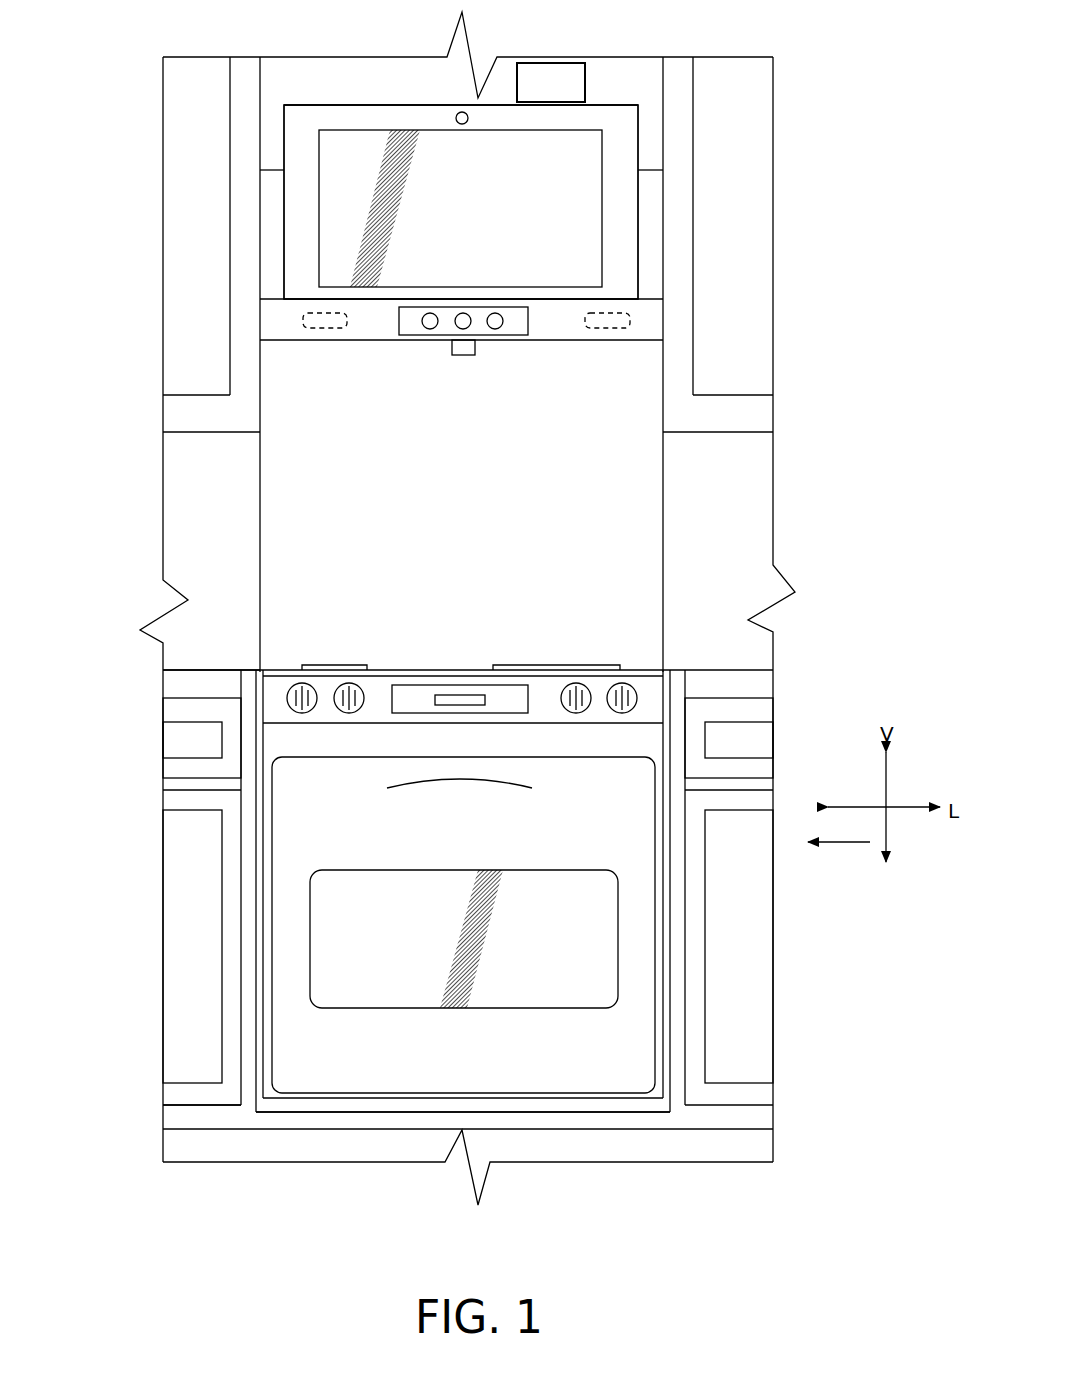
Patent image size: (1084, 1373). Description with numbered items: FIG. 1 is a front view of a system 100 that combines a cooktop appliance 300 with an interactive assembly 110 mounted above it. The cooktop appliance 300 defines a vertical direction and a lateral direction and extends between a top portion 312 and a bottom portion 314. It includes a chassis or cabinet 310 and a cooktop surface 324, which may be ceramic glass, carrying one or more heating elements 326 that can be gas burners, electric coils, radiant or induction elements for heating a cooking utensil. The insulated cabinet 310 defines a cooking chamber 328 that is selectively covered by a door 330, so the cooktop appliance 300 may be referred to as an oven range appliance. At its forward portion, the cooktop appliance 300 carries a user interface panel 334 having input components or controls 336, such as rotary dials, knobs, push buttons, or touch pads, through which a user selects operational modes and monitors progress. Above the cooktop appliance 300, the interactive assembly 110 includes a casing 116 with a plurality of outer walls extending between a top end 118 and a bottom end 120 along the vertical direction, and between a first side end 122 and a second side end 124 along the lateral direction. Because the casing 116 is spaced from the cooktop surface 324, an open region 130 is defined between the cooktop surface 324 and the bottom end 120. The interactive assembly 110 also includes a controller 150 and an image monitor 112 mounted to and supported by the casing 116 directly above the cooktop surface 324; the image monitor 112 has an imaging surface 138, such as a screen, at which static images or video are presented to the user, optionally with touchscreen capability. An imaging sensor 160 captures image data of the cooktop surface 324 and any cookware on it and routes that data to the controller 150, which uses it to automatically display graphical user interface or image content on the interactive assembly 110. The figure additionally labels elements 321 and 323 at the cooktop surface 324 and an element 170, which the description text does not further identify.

The system 100 is at (103, 116).
The interactive assembly 110 is at (652, 212).
The image monitor 112 is at (622, 132).
The casing 116 is at (640, 327).
The top end 118 is at (388, 100).
The bottom end 120 is at (566, 344).
The first side end 122 is at (670, 284).
The second side end 124 is at (258, 269).
The open region 130 is at (408, 507).
The imaging surface 138 is at (335, 217).
The controller 150 is at (551, 82).
The imaging sensor 160 is at (622, 335).
The handle 170 is at (322, 330).
The cooktop appliance 300 is at (243, 918).
The cabinet 310 is at (262, 1101).
The top portion 312 is at (253, 667).
The bottom portion 314 is at (312, 1114).
The heating element 321 is at (512, 666).
The heating element 323 is at (331, 666).
The cooktop surface 324 is at (287, 667).
The heating elements 326 is at (368, 668).
The cooking chamber 328 is at (406, 945).
The door 330 is at (645, 933).
The user interface panel 334 is at (650, 686).
The controls 336 is at (640, 700).